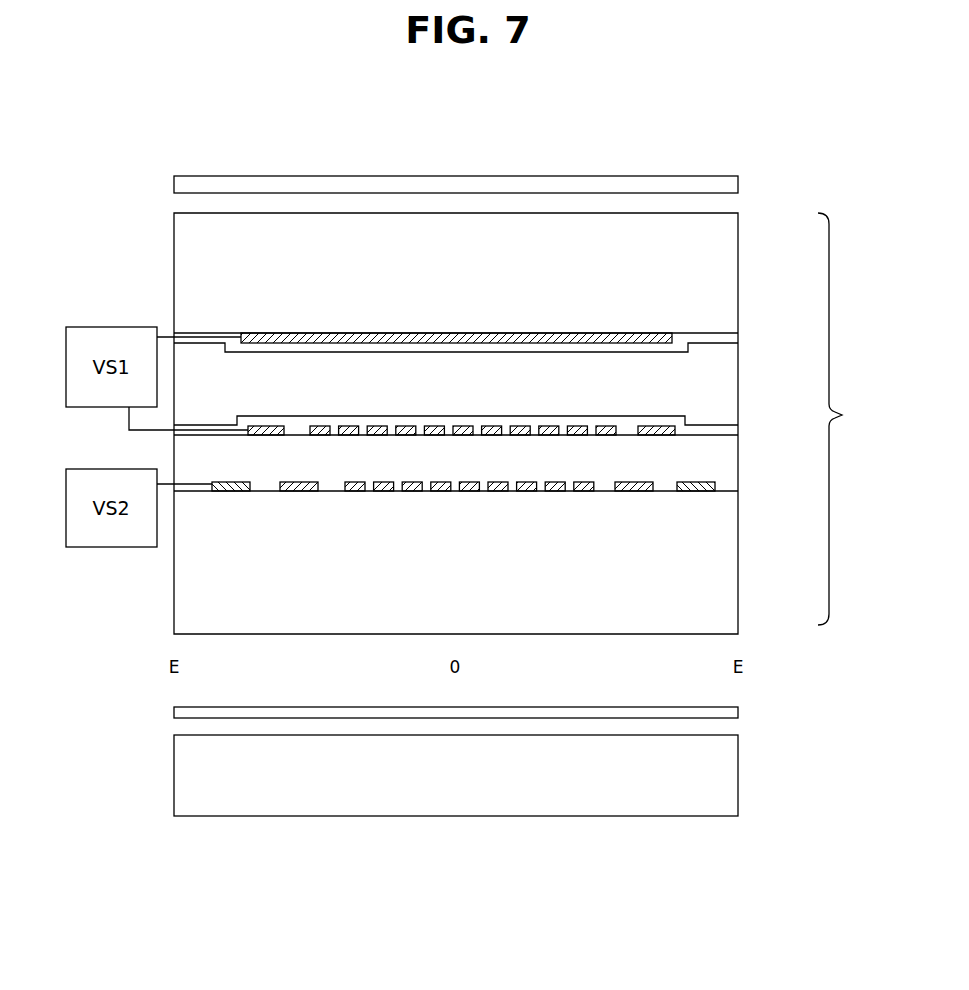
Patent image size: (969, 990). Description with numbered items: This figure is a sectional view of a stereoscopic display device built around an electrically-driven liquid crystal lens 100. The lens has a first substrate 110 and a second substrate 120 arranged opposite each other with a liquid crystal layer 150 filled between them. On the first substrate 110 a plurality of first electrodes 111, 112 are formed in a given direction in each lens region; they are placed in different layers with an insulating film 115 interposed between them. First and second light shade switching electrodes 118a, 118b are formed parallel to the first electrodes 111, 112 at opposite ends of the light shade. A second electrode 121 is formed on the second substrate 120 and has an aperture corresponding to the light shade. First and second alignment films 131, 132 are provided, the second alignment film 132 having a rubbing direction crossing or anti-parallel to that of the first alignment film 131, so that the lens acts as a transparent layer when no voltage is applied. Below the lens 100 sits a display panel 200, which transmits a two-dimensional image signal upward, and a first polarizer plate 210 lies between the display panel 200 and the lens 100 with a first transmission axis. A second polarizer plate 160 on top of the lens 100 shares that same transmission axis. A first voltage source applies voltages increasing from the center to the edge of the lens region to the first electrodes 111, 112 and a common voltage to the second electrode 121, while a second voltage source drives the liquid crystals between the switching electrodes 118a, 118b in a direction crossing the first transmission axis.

The electrically-driven liquid crystal lens 100 is at (847, 419).
The first substrate 110 is at (738, 562).
The first electrode 111 is at (635, 493).
The first electrode 112 is at (660, 425).
The insulating film 115 is at (738, 458).
The first light shade switching electrode 118a is at (715, 486).
The second light shade switching electrode 118b is at (234, 493).
The second substrate 120 is at (738, 267).
The second electrode 121 is at (738, 336).
The first alignment film 131 is at (738, 430).
The second alignment film 132 is at (657, 333).
The liquid crystal layer 150 is at (738, 375).
The second polarizer plate 160 is at (738, 185).
The display panel 200 is at (738, 775).
The first polarizer plate 210 is at (738, 711).